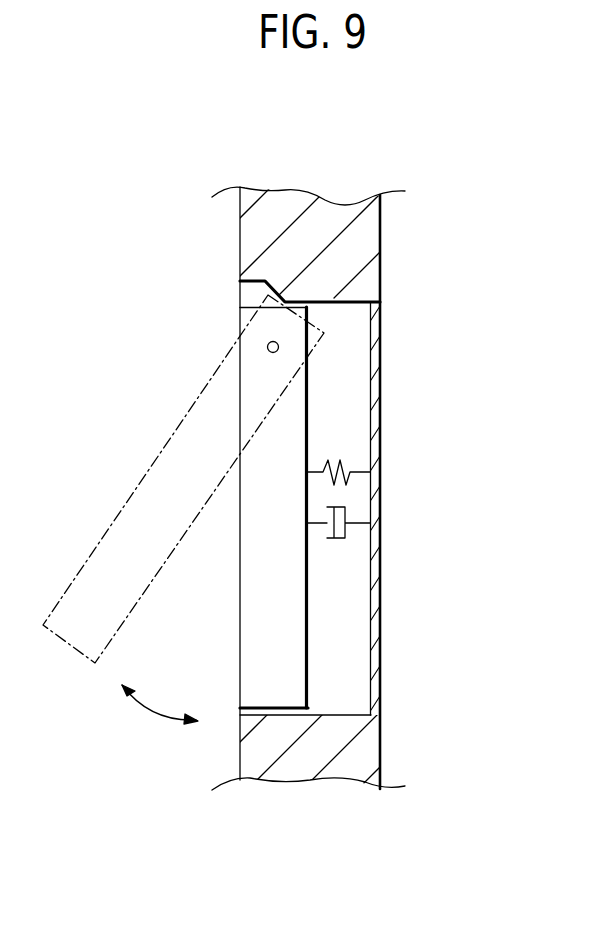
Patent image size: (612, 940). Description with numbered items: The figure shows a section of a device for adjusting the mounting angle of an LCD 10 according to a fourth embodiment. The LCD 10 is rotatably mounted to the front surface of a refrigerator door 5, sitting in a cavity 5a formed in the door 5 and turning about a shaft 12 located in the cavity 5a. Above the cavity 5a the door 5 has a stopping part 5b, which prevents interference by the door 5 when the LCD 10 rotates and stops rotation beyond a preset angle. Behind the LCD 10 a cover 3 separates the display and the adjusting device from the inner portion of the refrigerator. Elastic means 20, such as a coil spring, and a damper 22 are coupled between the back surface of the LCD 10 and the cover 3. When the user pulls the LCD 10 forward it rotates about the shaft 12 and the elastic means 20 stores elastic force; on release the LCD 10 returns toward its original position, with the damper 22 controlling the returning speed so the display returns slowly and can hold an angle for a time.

The cover 3 is at (382, 555).
The refrigerator door 5 is at (367, 238).
The cavity 5a is at (355, 643).
The stopping part 5b is at (272, 297).
The LCD 10 is at (258, 612).
The shaft 12 is at (268, 342).
The elastic means 20 is at (341, 470).
The damper 22 is at (333, 507).